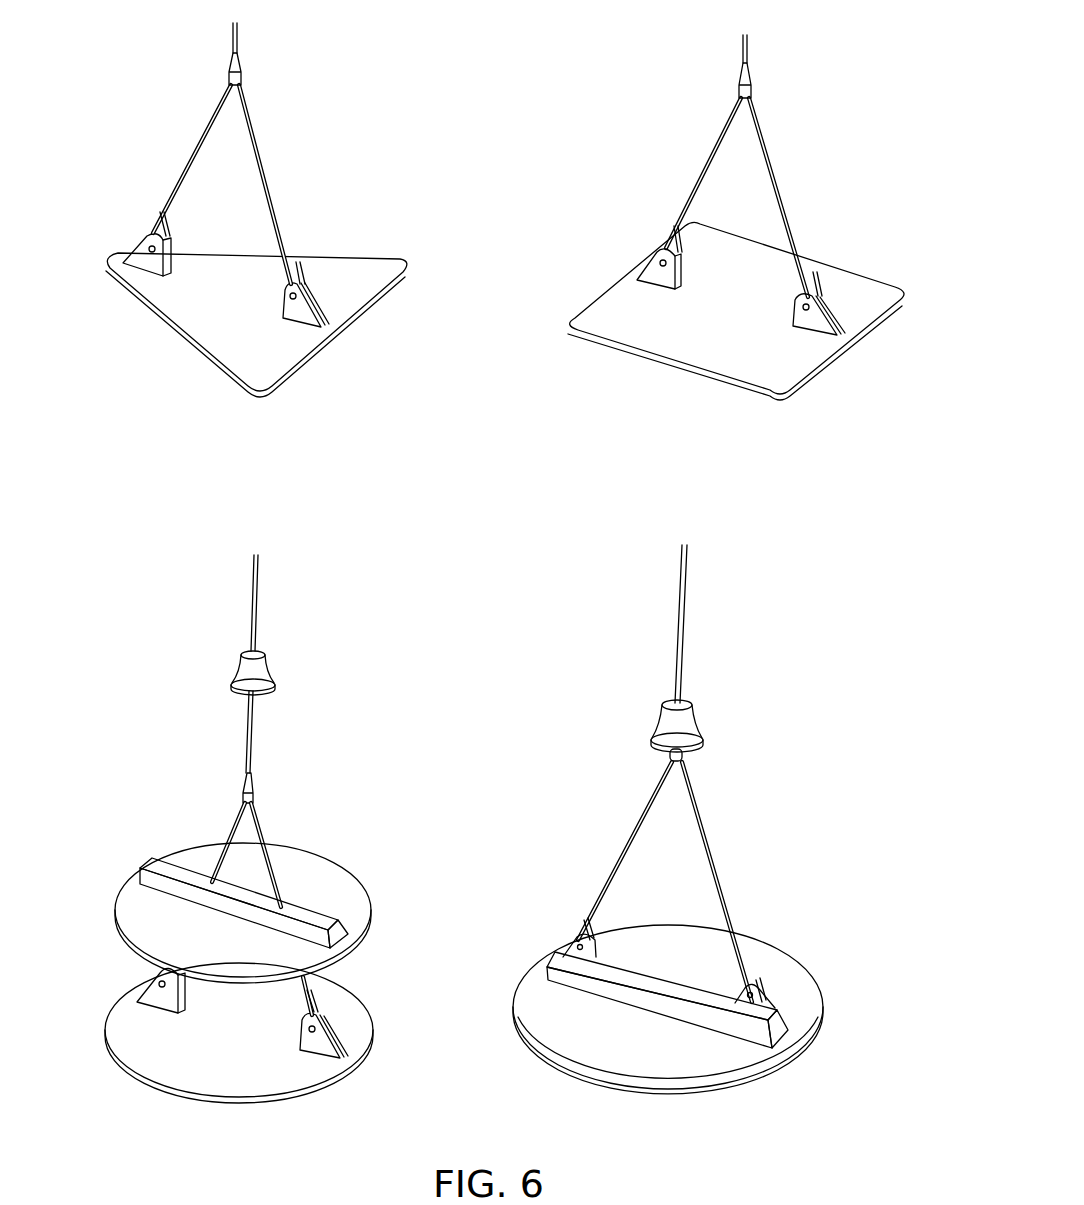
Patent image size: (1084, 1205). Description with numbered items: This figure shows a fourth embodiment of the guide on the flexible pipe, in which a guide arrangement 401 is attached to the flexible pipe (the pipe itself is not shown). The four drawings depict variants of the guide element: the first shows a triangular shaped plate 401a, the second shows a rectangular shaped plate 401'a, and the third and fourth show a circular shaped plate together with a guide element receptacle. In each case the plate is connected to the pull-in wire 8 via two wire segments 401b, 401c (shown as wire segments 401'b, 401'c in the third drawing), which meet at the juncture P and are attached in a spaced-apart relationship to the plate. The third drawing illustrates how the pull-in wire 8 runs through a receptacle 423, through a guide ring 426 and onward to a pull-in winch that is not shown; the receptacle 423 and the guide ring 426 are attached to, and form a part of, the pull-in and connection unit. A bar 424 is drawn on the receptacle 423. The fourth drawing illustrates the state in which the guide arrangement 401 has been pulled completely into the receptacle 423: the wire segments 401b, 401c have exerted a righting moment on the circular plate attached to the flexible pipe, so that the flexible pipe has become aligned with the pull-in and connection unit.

The pull-in wire 8 is at (238, 42).
The juncture P is at (230, 78).
The guide arrangement 401 is at (512, 483).
The triangular shaped plate 401a is at (247, 312).
The wire segment 401b is at (265, 173).
The wire segment 401c is at (197, 150).
The rectangular shaped plate 401'a is at (736, 311).
The wire segment 401'b is at (317, 848).
The wire segment 401'c is at (191, 838).
The receptacle 423 is at (360, 878).
The bar 424 is at (338, 917).
The guide ring 426 is at (240, 665).